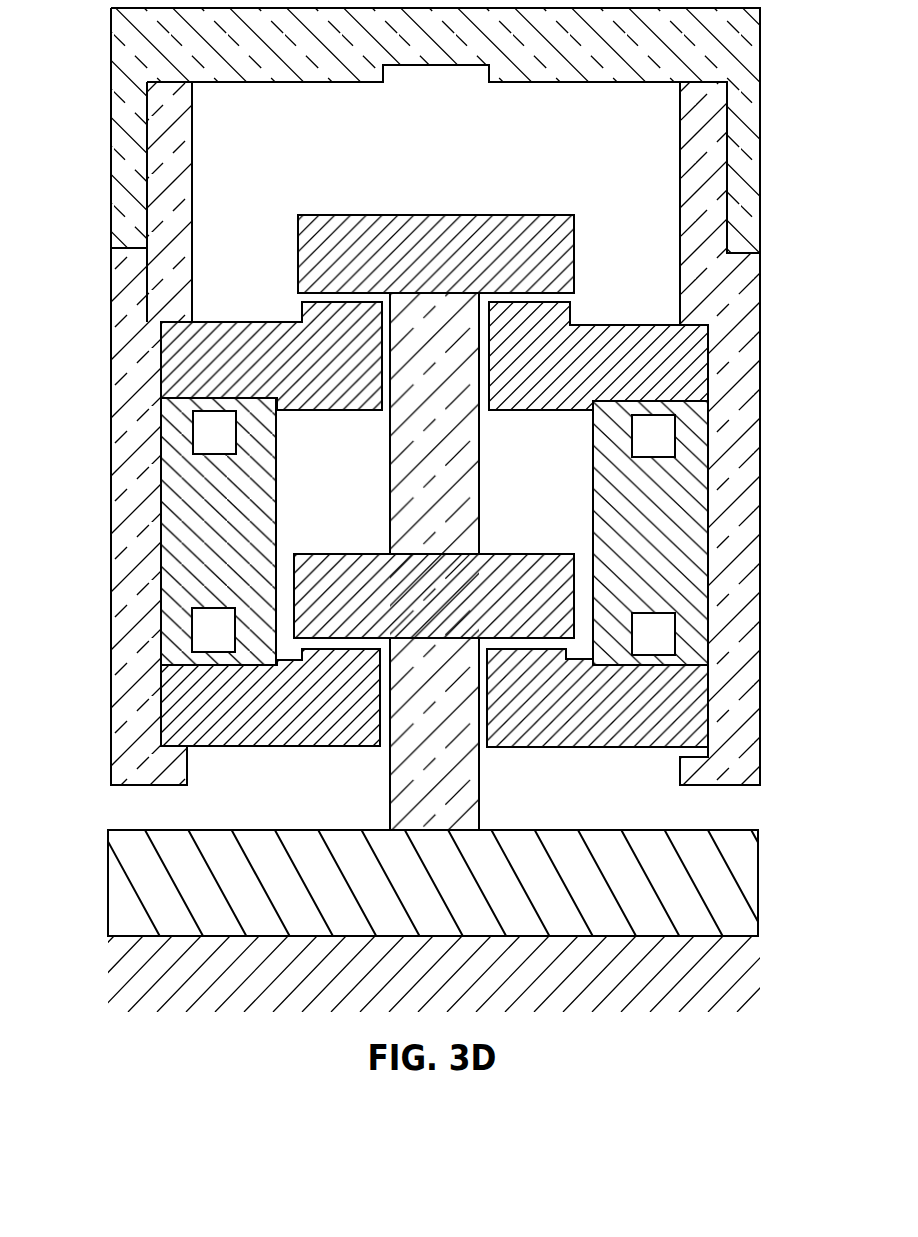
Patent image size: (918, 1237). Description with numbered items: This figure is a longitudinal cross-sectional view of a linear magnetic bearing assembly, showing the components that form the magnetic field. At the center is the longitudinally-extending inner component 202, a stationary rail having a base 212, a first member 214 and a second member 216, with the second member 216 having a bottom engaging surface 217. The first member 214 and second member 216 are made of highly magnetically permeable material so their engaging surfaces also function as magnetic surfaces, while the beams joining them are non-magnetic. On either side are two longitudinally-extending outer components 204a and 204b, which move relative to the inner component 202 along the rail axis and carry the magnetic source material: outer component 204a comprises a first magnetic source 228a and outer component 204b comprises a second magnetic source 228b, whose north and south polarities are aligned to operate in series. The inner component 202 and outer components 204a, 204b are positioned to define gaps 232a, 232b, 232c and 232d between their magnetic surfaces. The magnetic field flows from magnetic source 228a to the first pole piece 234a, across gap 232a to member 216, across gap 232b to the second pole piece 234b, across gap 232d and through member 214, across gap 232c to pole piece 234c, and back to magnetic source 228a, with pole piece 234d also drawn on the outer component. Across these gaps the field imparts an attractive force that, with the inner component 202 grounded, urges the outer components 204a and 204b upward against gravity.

The longitudinally-extending inner component 202 is at (356, 787).
The longitudinally-extending outer component 204a is at (134, 464).
The second longitudinally-extending outer component 204b is at (738, 468).
The base 212 is at (688, 882).
The first member 214 is at (525, 577).
The second member 216 is at (435, 245).
The bottom engaging surface 217 is at (383, 294).
The first magnetic source 228a is at (175, 538).
The second magnetic source 228b is at (690, 543).
The gap 232a is at (297, 297).
The gap 232b is at (568, 300).
The gap 232c is at (327, 642).
The gap 232d is at (587, 658).
The first pole piece 234a is at (175, 360).
The second pole piece 234b is at (690, 366).
The pole piece 234c is at (175, 704).
The pole piece 234d is at (688, 712).